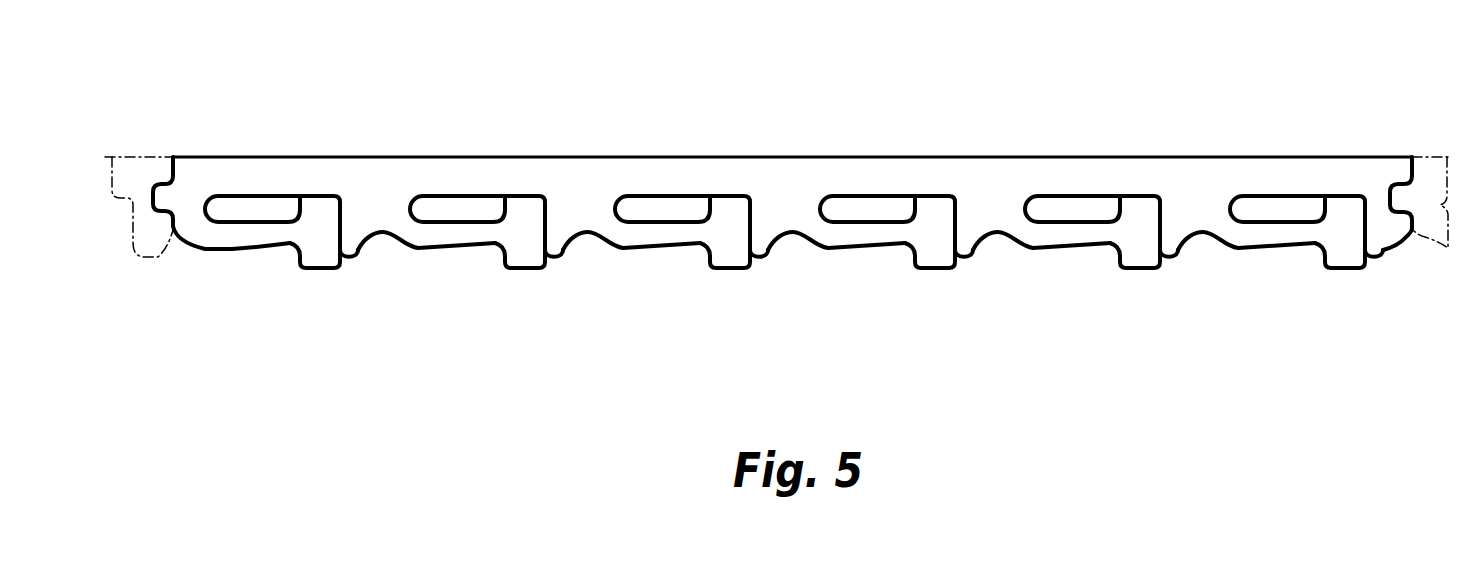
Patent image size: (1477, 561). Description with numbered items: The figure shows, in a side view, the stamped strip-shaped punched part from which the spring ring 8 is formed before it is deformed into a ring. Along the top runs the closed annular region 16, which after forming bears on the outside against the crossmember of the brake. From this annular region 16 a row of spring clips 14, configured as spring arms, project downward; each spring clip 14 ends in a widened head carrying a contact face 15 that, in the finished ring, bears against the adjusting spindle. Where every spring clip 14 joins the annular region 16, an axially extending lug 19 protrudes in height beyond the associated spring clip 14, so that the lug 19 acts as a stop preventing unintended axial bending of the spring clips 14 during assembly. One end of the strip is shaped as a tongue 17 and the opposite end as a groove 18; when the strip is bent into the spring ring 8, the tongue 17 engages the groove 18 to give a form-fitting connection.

The spring ring 8 is at (1196, 132).
The spring clip 14 is at (836, 294).
The contact face 15 is at (827, 156).
The annular region 16 is at (676, 176).
The tongue 17 is at (158, 174).
The groove 18 is at (1388, 174).
The lug 19 is at (353, 247).